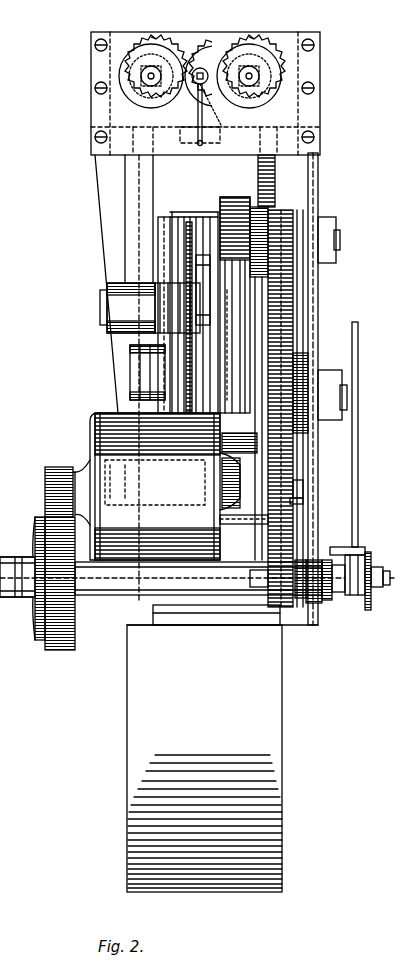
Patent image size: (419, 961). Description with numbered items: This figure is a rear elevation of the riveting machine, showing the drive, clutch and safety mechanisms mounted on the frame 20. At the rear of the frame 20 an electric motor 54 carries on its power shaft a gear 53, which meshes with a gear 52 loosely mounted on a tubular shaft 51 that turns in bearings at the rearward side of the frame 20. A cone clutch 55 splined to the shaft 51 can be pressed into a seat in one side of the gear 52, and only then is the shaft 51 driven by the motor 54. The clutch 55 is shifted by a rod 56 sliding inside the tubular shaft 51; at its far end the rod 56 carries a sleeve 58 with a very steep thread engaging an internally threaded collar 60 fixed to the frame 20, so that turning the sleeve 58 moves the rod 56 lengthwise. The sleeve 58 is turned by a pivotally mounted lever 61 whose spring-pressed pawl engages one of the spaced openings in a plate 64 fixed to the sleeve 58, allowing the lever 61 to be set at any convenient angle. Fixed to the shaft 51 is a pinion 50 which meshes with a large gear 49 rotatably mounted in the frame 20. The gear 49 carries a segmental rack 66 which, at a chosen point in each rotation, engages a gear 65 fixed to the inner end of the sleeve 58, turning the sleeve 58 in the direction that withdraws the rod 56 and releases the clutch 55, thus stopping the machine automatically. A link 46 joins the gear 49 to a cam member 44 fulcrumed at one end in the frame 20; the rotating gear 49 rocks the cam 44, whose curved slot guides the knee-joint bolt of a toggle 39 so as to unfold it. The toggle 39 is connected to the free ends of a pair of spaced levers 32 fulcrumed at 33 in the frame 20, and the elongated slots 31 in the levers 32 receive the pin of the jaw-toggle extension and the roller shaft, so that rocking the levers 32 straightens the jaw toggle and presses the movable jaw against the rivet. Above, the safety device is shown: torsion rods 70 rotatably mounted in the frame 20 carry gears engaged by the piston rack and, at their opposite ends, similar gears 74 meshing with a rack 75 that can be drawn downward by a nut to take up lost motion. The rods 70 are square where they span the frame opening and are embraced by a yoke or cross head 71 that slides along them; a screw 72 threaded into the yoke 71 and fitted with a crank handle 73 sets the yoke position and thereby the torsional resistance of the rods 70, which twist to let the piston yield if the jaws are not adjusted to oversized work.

The frame 20 is at (305, 117).
The elongated slots 31 is at (140, 372).
The levers 32 is at (205, 212).
The fulcrum 33 is at (198, 270).
The toggle 39 is at (172, 356).
The cam member 44 is at (237, 197).
The link 46 is at (252, 456).
The gear 49 is at (296, 318).
The pinion 50 is at (286, 607).
The tubular shaft 51 is at (263, 590).
The gear 52 is at (58, 650).
The gear 53 is at (57, 467).
The electric motor 54 is at (97, 412).
The cone clutch 55 is at (38, 630).
The rod 56 is at (393, 578).
The sleeve 58 is at (337, 592).
The collar 60 is at (327, 600).
The lever 61 is at (358, 503).
The plate 64 is at (371, 556).
The gear 65 is at (318, 625).
The segmental rack 66 is at (300, 500).
The rods 70 is at (150, 76).
The yoke or cross head 71 is at (190, 227).
The screw 72 is at (198, 66).
The crank handle 73 is at (203, 120).
The gears 74 is at (142, 38).
The rack 75 is at (226, 40).